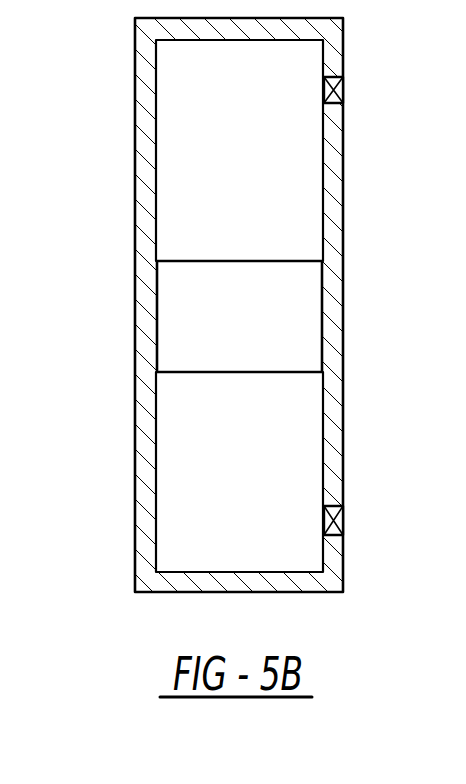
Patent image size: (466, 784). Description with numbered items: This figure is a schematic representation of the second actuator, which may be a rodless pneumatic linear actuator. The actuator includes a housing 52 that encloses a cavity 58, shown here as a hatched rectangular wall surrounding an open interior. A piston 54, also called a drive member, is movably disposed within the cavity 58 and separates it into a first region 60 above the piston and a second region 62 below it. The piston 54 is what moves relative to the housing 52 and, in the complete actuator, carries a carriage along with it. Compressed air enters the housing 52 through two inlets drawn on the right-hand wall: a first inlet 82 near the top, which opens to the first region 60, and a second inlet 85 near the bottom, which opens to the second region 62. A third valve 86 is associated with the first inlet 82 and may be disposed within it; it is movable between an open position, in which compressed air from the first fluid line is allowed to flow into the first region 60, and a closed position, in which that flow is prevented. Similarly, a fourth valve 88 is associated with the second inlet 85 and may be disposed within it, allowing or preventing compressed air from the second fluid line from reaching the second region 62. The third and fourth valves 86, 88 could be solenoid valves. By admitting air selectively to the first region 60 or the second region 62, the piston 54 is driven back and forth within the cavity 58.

The housing 52 is at (335, 147).
The piston 54 is at (287, 302).
The cavity 58 is at (193, 433).
The first region 60 is at (182, 195).
The second region 62 is at (277, 432).
The first inlet 82 is at (343, 80).
The second inlet 85 is at (340, 535).
The third valve 86 is at (343, 98).
The fourth valve 88 is at (343, 512).